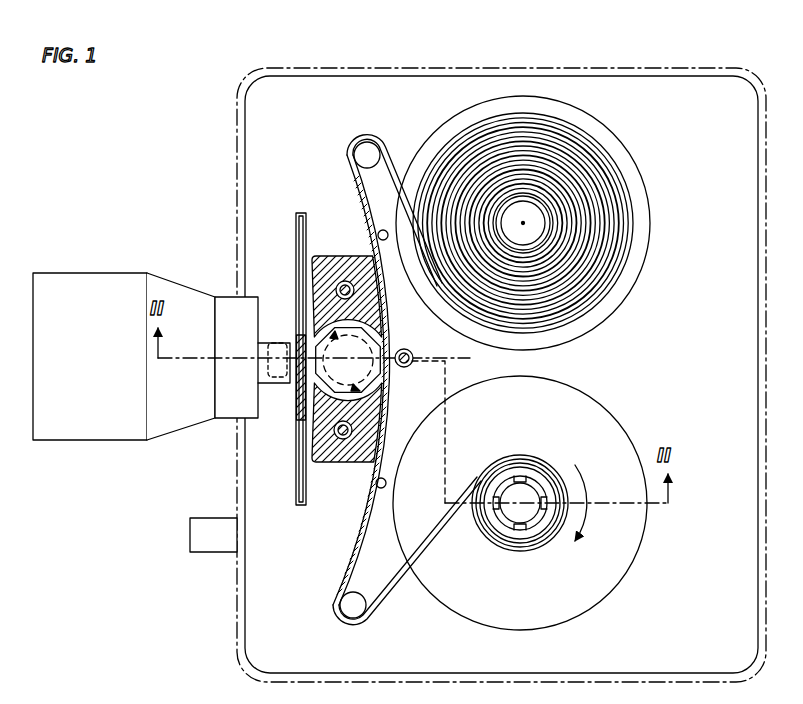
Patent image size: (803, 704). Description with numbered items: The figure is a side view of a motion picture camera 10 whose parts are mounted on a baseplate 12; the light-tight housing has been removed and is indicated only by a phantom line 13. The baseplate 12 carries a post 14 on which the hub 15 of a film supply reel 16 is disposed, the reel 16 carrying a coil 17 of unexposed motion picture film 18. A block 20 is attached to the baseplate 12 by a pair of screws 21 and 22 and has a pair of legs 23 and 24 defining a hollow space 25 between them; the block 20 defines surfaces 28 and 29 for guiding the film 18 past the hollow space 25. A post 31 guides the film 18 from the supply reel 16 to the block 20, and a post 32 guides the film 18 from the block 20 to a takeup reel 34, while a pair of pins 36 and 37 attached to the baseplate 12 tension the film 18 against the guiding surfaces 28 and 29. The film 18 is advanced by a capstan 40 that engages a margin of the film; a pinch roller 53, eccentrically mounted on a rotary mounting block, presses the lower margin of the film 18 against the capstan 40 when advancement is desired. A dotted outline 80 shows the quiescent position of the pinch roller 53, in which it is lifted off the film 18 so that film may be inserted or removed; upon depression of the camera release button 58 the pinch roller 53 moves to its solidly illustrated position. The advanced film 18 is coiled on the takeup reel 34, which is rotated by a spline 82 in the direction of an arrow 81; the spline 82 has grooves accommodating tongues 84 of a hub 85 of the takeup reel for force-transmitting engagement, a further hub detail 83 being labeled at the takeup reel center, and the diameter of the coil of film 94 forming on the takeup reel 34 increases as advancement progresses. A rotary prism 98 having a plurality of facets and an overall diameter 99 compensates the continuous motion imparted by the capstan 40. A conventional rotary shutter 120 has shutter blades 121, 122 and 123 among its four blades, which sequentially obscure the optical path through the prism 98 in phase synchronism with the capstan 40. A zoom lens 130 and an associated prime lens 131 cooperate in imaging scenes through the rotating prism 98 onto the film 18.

The motion picture camera 10 is at (660, 355).
The baseplate 12 is at (243, 647).
The phantom line 13 is at (237, 170).
The post 14 is at (525, 238).
The hub 15 is at (497, 216).
The film supply reel 16 is at (635, 283).
The coil 17 is at (578, 148).
The motion picture film 18 is at (347, 172).
The block 20 is at (322, 255).
The screw 21 is at (350, 272).
The screw 22 is at (322, 462).
The leg 23 is at (380, 300).
The leg 24 is at (383, 418).
The hollow space 25 is at (387, 327).
The film guiding surface 28 is at (395, 281).
The film guiding surface 29 is at (385, 447).
The post 31 is at (378, 143).
The post 32 is at (368, 616).
The takeup reel 34 is at (605, 425).
The pin 36 is at (383, 230).
The pin 37 is at (386, 484).
The capstan 40 is at (382, 377).
The pinch roller 53 is at (445, 361).
The camera release button 58 is at (206, 517).
The dotted outline 80 is at (415, 352).
The arrow 81 is at (587, 480).
The spline 82 is at (505, 528).
The hub key 83 is at (540, 525).
The tongue 84 is at (519, 532).
The hub 85 is at (478, 520).
The coil of the film 94 is at (512, 460).
The rotary prism 98 is at (296, 395).
The overall diameter 99 is at (348, 360).
The rotary shutter 120 is at (296, 303).
The shutter blade 121 is at (298, 228).
The shutter blade 122 is at (270, 343).
The shutter blade 123 is at (297, 490).
The zoom lens 130 is at (124, 356).
The prime lens 131 is at (263, 385).